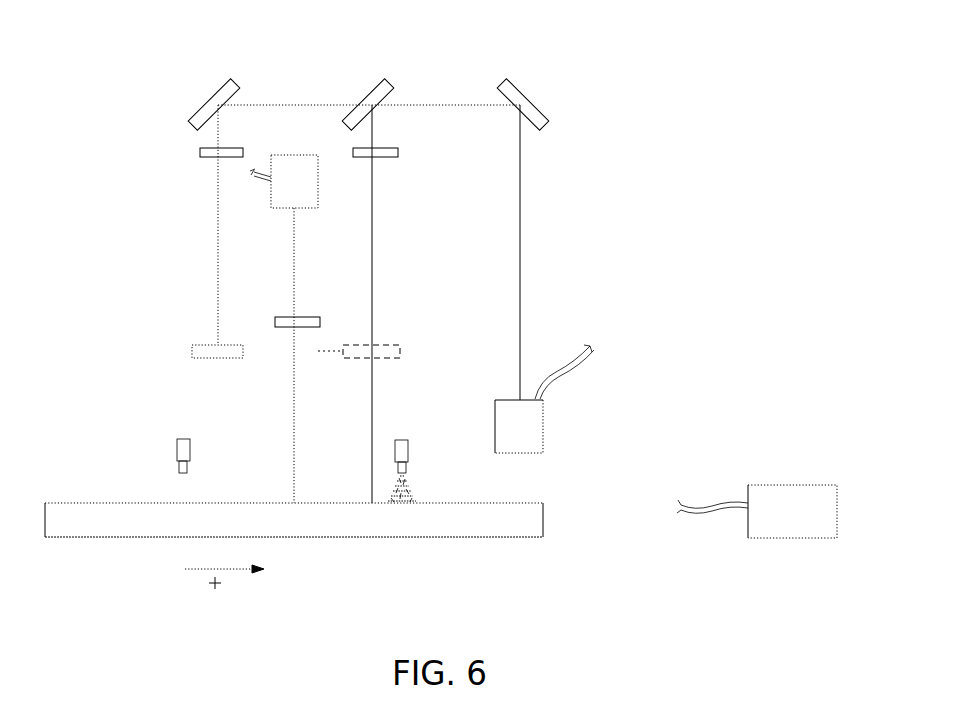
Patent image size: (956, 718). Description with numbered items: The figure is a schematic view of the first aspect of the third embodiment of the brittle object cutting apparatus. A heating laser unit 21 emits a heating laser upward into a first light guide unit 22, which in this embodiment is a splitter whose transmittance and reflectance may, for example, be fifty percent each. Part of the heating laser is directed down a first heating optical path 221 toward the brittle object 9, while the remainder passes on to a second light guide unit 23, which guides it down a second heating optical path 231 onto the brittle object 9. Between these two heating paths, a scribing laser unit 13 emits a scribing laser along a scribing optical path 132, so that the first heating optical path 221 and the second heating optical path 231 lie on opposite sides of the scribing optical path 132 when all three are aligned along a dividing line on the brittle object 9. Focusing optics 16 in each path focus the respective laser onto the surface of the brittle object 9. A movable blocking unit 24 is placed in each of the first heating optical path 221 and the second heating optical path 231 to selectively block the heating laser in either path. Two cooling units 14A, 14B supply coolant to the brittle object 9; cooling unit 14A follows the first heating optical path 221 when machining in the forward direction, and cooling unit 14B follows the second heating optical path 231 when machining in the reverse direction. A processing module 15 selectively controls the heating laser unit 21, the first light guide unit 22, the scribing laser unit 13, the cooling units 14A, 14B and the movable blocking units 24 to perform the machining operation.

The brittle object 9 is at (520, 538).
The scribing laser unit 13 is at (285, 200).
The scribing optical path 132 is at (294, 292).
The cooling unit 14A is at (401, 440).
The cooling unit 14B is at (178, 440).
The processing module 15 is at (795, 528).
The focusing optics 16 is at (222, 157).
The heating laser unit 21 is at (543, 428).
The first light guide unit 22 is at (386, 88).
The first heating optical path 221 is at (373, 257).
The second light guide unit 23 is at (196, 120).
The second heating optical path 231 is at (218, 228).
The movable blocking unit 24 is at (200, 345).